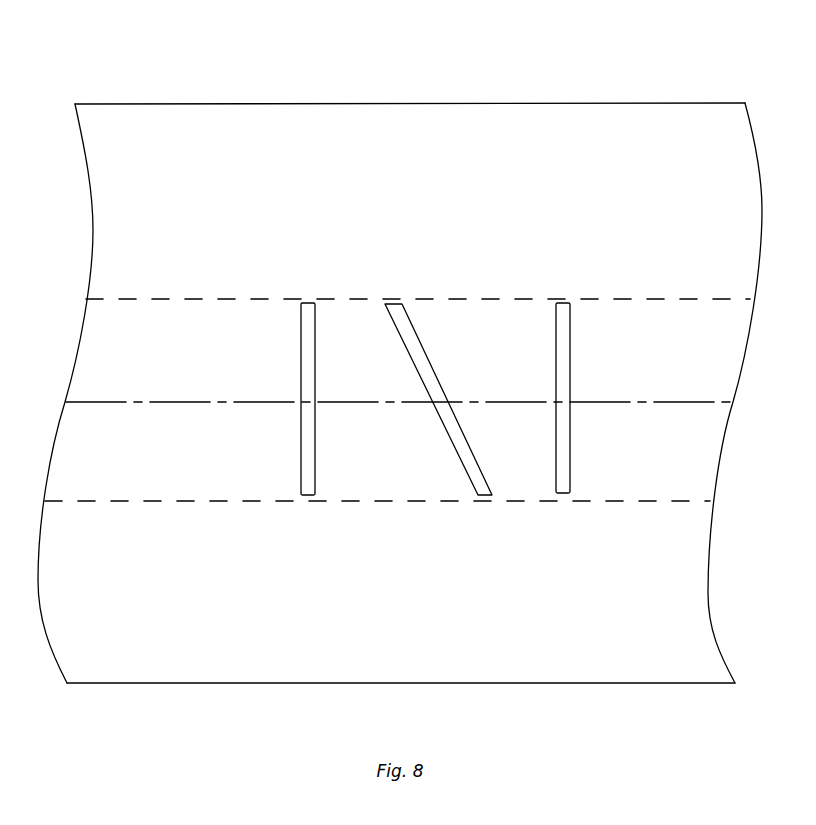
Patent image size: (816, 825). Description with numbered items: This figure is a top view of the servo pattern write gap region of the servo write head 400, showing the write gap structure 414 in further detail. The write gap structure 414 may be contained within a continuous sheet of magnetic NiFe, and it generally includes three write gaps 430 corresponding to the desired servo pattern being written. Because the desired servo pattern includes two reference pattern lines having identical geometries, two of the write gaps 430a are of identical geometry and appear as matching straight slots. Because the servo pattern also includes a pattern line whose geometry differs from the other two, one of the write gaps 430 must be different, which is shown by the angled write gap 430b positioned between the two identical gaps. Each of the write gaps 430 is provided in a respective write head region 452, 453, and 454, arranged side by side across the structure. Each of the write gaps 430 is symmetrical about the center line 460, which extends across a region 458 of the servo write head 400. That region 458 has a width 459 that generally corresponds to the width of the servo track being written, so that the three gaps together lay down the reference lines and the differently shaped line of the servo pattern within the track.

The servo write head 400 is at (570, 101).
The write gap structure 414 is at (298, 213).
The write gaps 430 is at (434, 410).
The write gaps of identical geometry 430a is at (434, 446).
The angled write gap 430b is at (447, 451).
The write head region 452 is at (306, 513).
The write head region 453 is at (482, 520).
The write head region 454 is at (565, 517).
The region of the servo write head 458 is at (700, 473).
The width 459 is at (668, 297).
The center line 460 is at (110, 405).